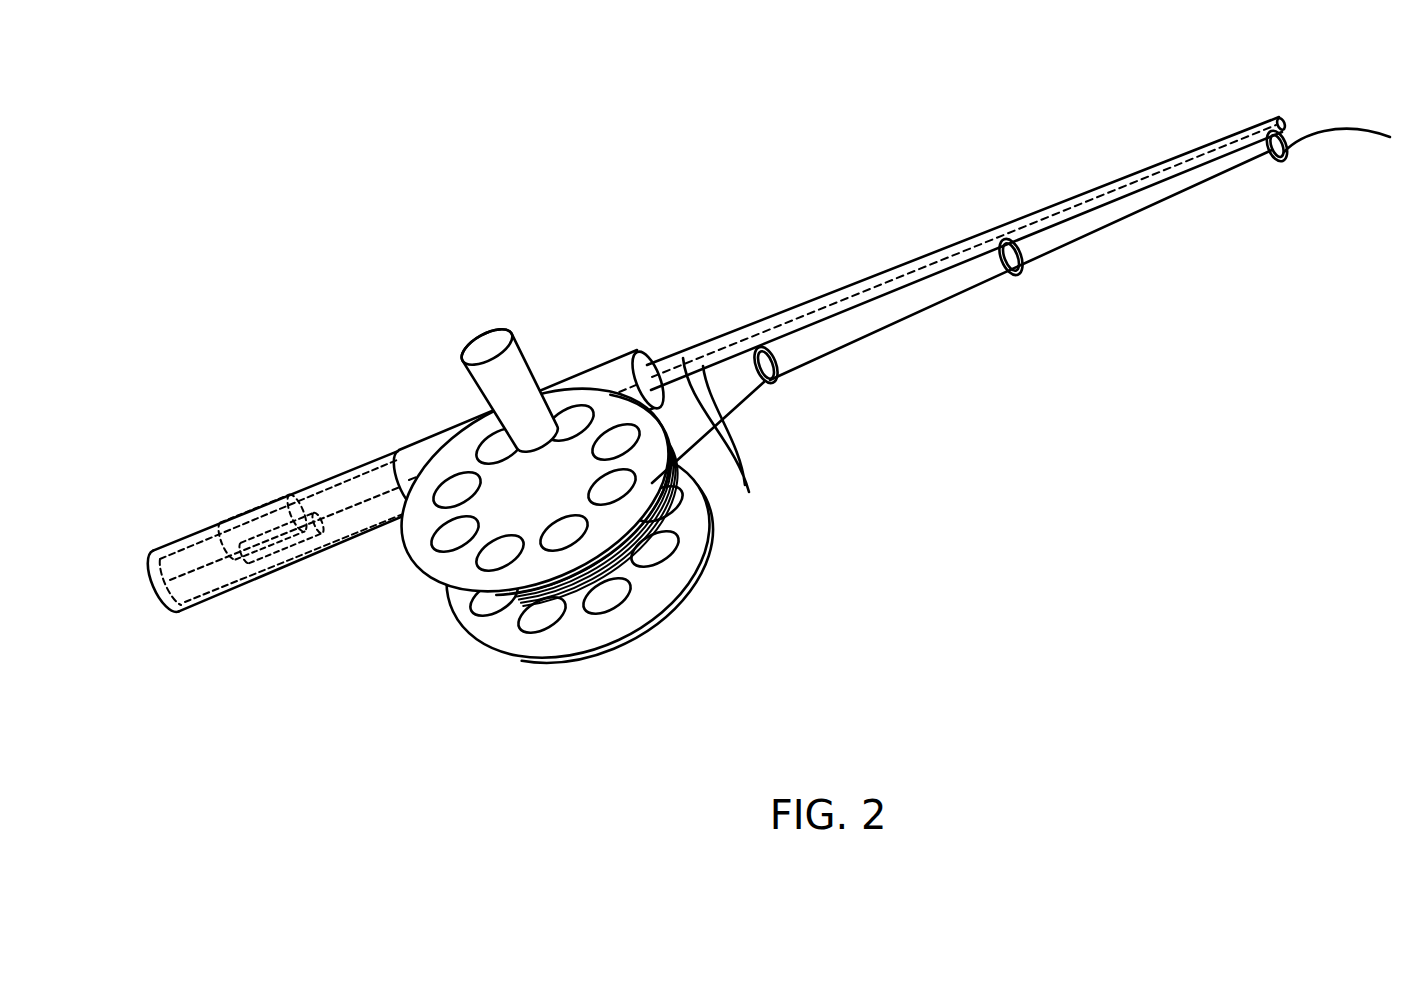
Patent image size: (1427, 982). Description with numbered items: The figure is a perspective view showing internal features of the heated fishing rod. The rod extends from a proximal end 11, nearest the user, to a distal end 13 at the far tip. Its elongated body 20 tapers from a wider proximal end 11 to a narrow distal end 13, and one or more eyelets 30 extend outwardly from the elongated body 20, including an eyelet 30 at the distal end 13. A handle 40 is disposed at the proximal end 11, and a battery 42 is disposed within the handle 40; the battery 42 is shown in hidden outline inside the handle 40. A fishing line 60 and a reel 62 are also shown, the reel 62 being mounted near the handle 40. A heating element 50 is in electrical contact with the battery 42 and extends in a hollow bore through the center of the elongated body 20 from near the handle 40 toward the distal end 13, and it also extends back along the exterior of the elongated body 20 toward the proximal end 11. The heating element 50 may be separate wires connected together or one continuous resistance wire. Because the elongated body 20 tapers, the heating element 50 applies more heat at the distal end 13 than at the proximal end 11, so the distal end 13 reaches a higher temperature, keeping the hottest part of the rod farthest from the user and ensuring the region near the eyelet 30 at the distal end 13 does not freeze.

The proximal end 11 is at (627, 320).
The distal end 13 is at (1272, 93).
The elongated body 20 is at (878, 270).
The eyelets 30 is at (769, 385).
The handle 40 is at (354, 527).
The battery 42 is at (234, 518).
The heating element 50 is at (1235, 83).
The fishing line 60 is at (920, 304).
The reel 62 is at (584, 644).